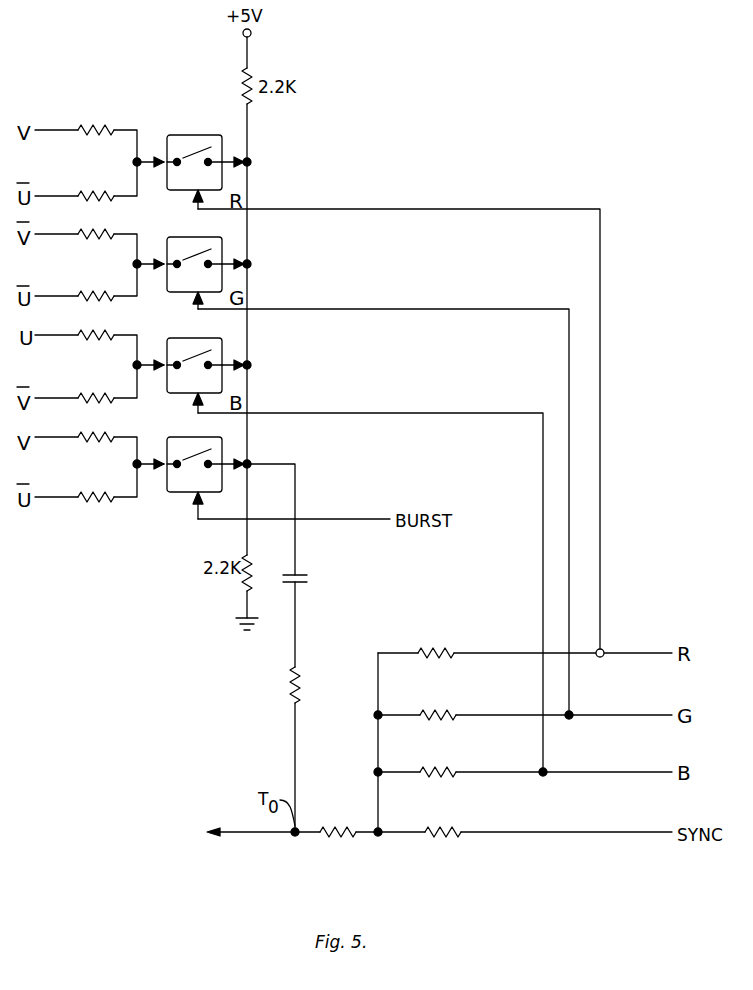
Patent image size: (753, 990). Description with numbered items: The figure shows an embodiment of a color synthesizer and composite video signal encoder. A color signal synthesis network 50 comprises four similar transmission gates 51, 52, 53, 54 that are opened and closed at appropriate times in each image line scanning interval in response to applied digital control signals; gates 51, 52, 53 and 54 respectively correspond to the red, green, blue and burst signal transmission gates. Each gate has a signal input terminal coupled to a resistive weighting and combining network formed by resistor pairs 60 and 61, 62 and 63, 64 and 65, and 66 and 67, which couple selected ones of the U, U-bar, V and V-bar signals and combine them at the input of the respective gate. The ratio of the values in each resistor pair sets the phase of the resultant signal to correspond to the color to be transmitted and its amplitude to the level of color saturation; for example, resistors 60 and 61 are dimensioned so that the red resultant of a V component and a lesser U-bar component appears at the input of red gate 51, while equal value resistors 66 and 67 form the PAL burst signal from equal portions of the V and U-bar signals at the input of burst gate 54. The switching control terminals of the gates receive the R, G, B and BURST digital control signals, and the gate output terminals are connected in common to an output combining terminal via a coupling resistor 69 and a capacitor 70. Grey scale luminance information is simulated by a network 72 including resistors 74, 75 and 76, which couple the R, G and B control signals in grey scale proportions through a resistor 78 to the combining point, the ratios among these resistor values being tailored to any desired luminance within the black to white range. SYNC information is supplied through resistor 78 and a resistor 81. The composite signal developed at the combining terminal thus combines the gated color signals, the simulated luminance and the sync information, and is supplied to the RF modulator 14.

The RF modulator 14 is at (172, 853).
The color signal synthesis network 50 is at (152, 93).
The red transmission gate 51 is at (207, 135).
The green transmission gate 52 is at (185, 237).
The blue transmission gate 53 is at (185, 338).
The burst transmission gate 54 is at (186, 437).
The weighting resistor 60 is at (103, 118).
The weighting resistor 61 is at (80, 205).
The weighting resistor 62 is at (108, 235).
The weighting resistor 63 is at (80, 306).
The weighting resistor 64 is at (108, 334).
The weighting resistor 65 is at (82, 404).
The weighting resistor 66 is at (108, 435).
The weighting resistor 67 is at (100, 502).
The coupling resistor 69 is at (300, 685).
The capacitor 70 is at (307, 578).
The luminance simulating network 72 is at (480, 619).
The resistor 74 is at (440, 648).
The resistor 75 is at (455, 712).
The resistor 76 is at (457, 770).
The resistor 78 is at (325, 828).
The resistor 81 is at (456, 830).